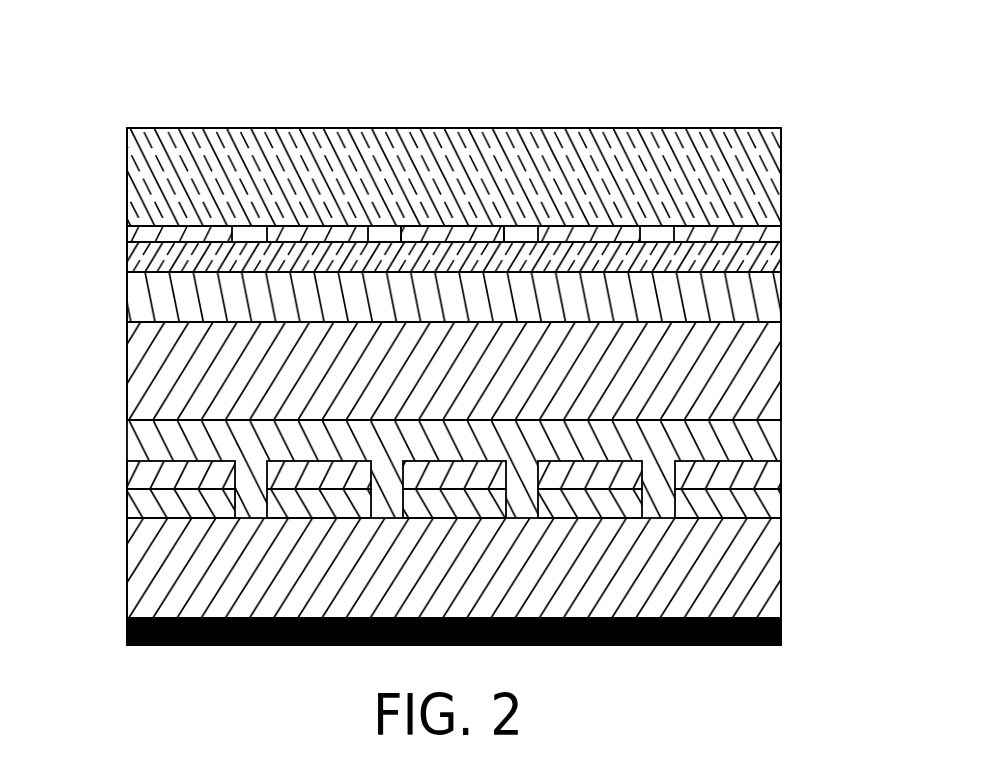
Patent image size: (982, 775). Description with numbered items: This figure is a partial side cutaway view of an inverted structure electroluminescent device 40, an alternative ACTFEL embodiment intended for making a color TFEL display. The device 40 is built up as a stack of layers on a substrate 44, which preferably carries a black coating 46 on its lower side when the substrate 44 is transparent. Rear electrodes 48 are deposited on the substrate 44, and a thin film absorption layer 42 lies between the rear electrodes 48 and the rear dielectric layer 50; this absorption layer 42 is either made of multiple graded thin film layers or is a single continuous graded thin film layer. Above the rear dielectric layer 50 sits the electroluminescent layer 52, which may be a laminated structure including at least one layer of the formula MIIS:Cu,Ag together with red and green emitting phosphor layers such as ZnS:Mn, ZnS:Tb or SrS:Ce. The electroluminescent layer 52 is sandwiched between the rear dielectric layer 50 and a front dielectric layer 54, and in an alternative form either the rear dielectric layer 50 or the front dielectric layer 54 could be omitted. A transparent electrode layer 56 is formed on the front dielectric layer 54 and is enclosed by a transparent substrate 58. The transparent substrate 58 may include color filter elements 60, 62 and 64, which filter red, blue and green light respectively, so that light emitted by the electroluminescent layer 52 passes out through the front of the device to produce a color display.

The electroluminescent device 40 is at (127, 88).
The thin film absorption layer 42 is at (781, 467).
The substrate 44 is at (781, 570).
The black coating 46 is at (781, 635).
The rear electrodes 48 is at (781, 508).
The rear dielectric layer 50 is at (781, 430).
The electroluminescent layer 52 is at (781, 370).
The front dielectric layer 54 is at (781, 305).
The transparent electrode layer 56 is at (781, 262).
The transparent substrate 58 is at (781, 177).
The color filter element 60 is at (127, 224).
The color filter element 62 is at (287, 230).
The color filter element 64 is at (420, 233).